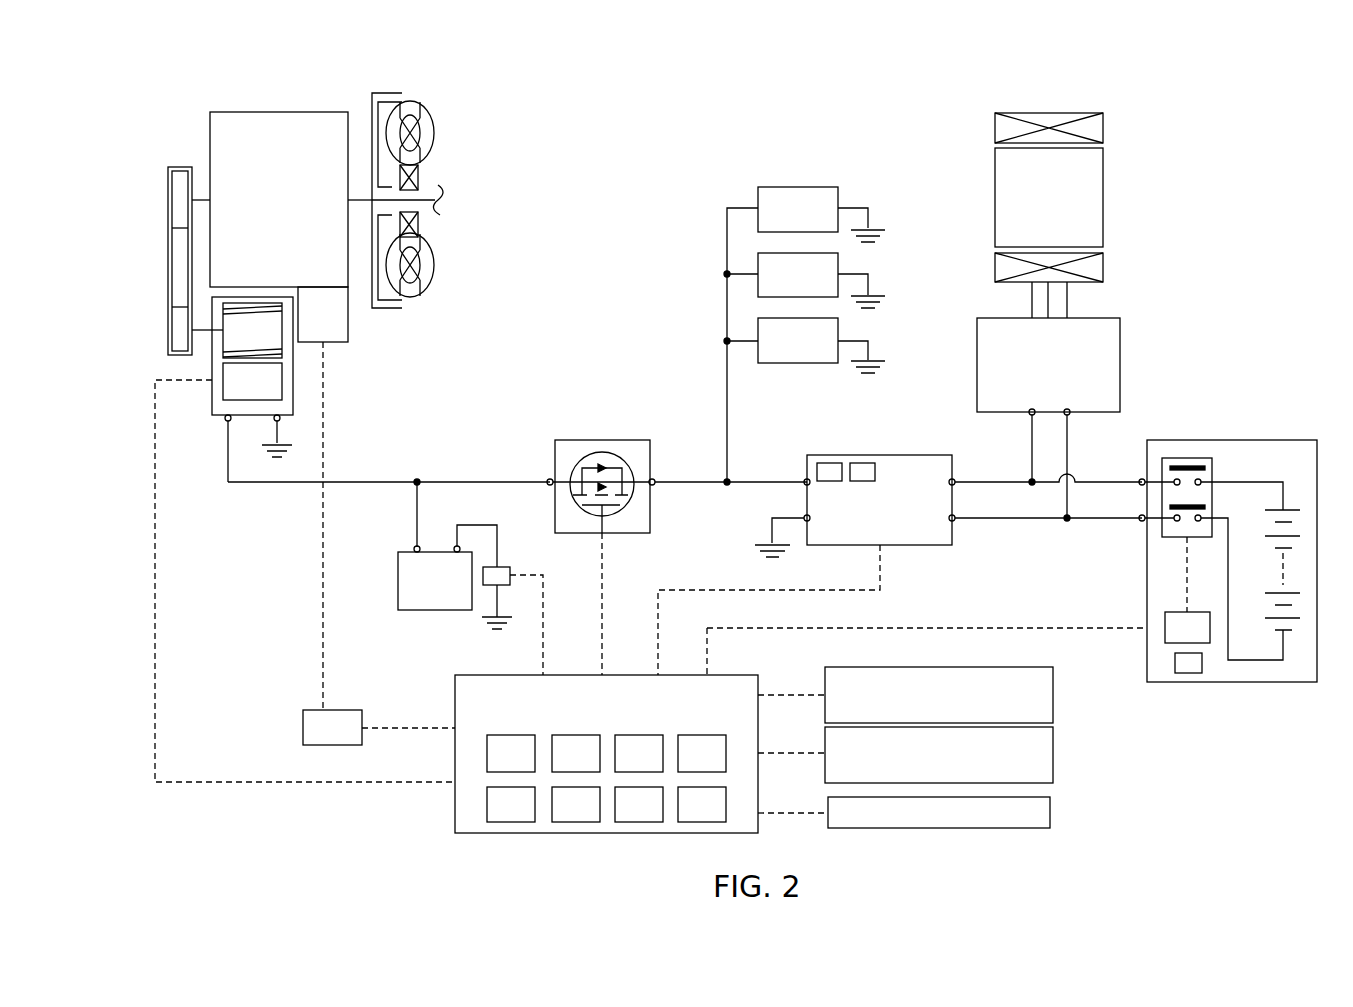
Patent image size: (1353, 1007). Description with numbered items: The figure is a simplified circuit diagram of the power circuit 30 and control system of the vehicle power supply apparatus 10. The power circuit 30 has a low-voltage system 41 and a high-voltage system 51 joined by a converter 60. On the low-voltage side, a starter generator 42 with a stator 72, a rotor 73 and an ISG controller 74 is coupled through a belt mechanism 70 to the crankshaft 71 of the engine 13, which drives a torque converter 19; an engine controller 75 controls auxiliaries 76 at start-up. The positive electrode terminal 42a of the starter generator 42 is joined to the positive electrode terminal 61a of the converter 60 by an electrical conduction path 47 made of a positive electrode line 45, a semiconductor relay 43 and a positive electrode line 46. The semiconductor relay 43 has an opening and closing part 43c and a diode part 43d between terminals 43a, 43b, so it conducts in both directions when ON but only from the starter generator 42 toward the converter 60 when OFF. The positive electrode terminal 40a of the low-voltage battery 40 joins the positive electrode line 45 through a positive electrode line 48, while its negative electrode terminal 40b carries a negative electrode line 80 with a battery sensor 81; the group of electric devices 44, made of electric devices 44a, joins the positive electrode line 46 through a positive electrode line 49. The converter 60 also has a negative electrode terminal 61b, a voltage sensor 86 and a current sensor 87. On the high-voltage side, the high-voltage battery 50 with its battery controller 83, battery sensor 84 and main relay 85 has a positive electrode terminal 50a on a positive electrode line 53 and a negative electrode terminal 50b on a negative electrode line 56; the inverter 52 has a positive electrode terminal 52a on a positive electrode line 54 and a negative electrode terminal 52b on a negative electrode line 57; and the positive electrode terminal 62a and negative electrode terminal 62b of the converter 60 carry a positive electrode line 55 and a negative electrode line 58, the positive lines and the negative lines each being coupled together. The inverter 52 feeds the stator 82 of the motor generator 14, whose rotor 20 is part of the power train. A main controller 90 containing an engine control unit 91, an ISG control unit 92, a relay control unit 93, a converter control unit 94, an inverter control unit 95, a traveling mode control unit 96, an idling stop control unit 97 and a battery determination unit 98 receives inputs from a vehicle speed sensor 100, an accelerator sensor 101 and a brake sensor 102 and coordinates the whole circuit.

The vehicle power supply apparatus 10 is at (530, 325).
The engine 13 is at (250, 112).
The motor generator 14 is at (1097, 193).
The torque converter 19 is at (433, 133).
The rotor 20 is at (1103, 212).
The power circuit 30 is at (1227, 232).
The low-voltage battery 40 is at (411, 569).
The positive electrode terminal 40a is at (412, 548).
The negative electrode terminal 40b is at (457, 553).
The low-voltage system 41 is at (272, 572).
The starter generator 42 is at (210, 367).
The positive electrode terminal 42a is at (228, 432).
The semiconductor relay 43 is at (604, 538).
The terminal 43a is at (548, 480).
The terminal 43b is at (655, 480).
The opening and closing part 43c is at (612, 525).
The diode part 43d is at (600, 466).
The group of electric devices 44 is at (796, 302).
The electric devices 44a is at (845, 208).
The positive electrode line 45 is at (276, 485).
The positive electrode line 46 is at (680, 484).
The electrical conduction path 47 is at (412, 478).
The positive electrode line 48 is at (415, 510).
The positive electrode line 49 is at (725, 305).
The high-voltage battery 50 is at (1231, 572).
The positive electrode terminal 50a is at (1142, 478).
The negative electrode terminal 50b is at (1142, 522).
The high-voltage system 51 is at (1264, 400).
The inverter 52 is at (1079, 348).
The positive electrode terminal 52a is at (1030, 409).
The negative electrode terminal 52b is at (1068, 409).
The positive electrode line 53 is at (1095, 481).
The positive electrode line 54 is at (1030, 440).
The positive electrode line 55 is at (987, 481).
The negative electrode line 56 is at (1093, 520).
The negative electrode line 57 is at (1065, 492).
The negative electrode line 58 is at (1010, 520).
The converter 60 is at (826, 545).
The positive electrode terminal 61a is at (805, 480).
The negative electrode terminal 61b is at (804, 517).
The positive electrode terminal 62a is at (952, 478).
The negative electrode terminal 62b is at (955, 522).
The belt mechanism 70 is at (178, 263).
The crankshaft 71 is at (203, 200).
The stator 72 is at (255, 303).
The rotor 73 is at (232, 332).
The ISG controller 74 is at (223, 385).
The engine controller 75 is at (303, 724).
The auxiliaries 76 is at (340, 342).
The negative electrode line 80 is at (498, 528).
The battery sensor 81 is at (510, 575).
The stator 82 is at (1103, 128).
The battery controller 83 is at (1195, 612).
The battery sensor 84 is at (1190, 674).
The main relay 85 is at (1192, 458).
The voltage sensor 86 is at (830, 462).
The current sensor 87 is at (863, 462).
The main controller 90 is at (772, 730).
The engine control unit 91 is at (511, 753).
The ISG control unit 92 is at (576, 753).
The relay control unit 93 is at (639, 753).
The converter control unit 94 is at (702, 753).
The inverter control unit 95 is at (511, 804).
The traveling mode control unit 96 is at (576, 804).
The idling stop control unit 97 is at (639, 804).
The battery determination unit 98 is at (702, 804).
The vehicle speed sensor 100 is at (1055, 695).
The accelerator sensor 101 is at (1055, 753).
The brake sensor 102 is at (1052, 812).